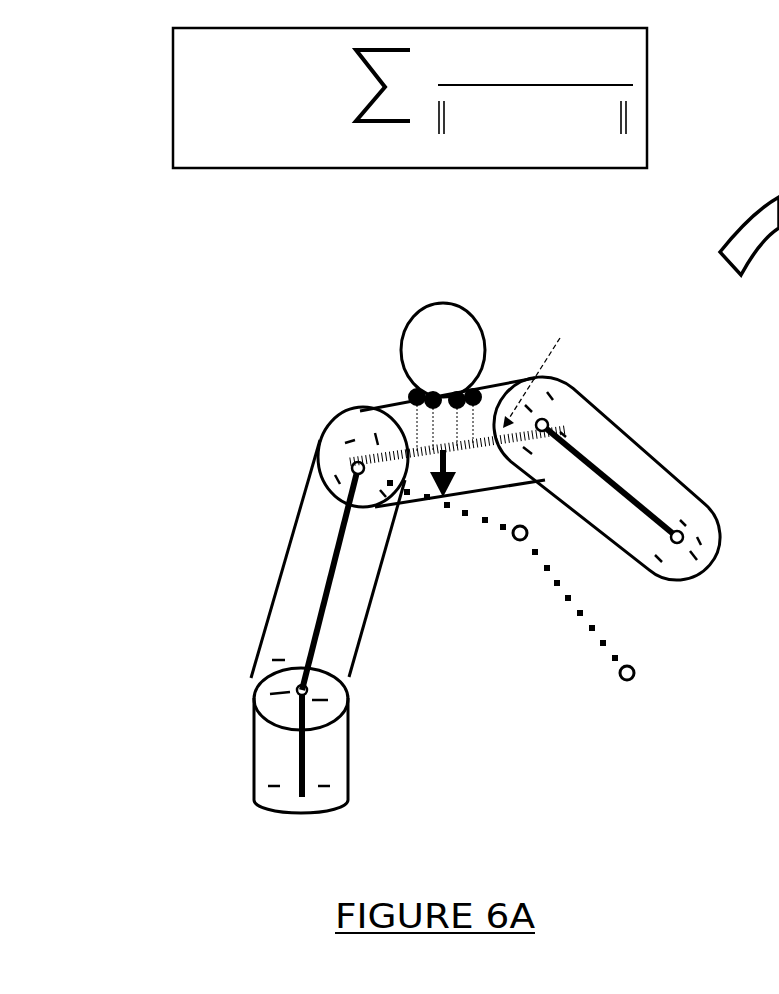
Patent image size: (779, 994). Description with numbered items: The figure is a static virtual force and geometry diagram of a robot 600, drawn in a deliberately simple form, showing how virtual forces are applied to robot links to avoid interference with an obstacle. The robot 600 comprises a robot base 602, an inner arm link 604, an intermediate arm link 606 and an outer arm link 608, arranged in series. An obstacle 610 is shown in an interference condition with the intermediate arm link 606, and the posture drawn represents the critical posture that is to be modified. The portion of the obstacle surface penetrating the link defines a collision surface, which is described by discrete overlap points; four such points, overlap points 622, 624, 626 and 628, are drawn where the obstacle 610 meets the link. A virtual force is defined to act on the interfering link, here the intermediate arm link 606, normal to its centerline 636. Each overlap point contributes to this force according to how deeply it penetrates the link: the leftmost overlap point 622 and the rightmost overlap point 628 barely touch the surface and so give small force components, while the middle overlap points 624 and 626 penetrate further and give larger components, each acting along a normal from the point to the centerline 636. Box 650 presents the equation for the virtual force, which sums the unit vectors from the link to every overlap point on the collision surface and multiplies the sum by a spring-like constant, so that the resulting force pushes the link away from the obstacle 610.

The robot 600 is at (447, 502).
The robot base 602 is at (253, 760).
The inner arm link 604 is at (290, 542).
The intermediate arm link 606 is at (490, 385).
The outer arm link 608 is at (660, 457).
The obstacle 610 is at (443, 303).
The overlap point 622 is at (404, 391).
The overlap point 624 is at (433, 400).
The overlap point 626 is at (457, 400).
The overlap point 628 is at (473, 397).
The centerline 636 is at (468, 447).
The box 650 is at (647, 98).